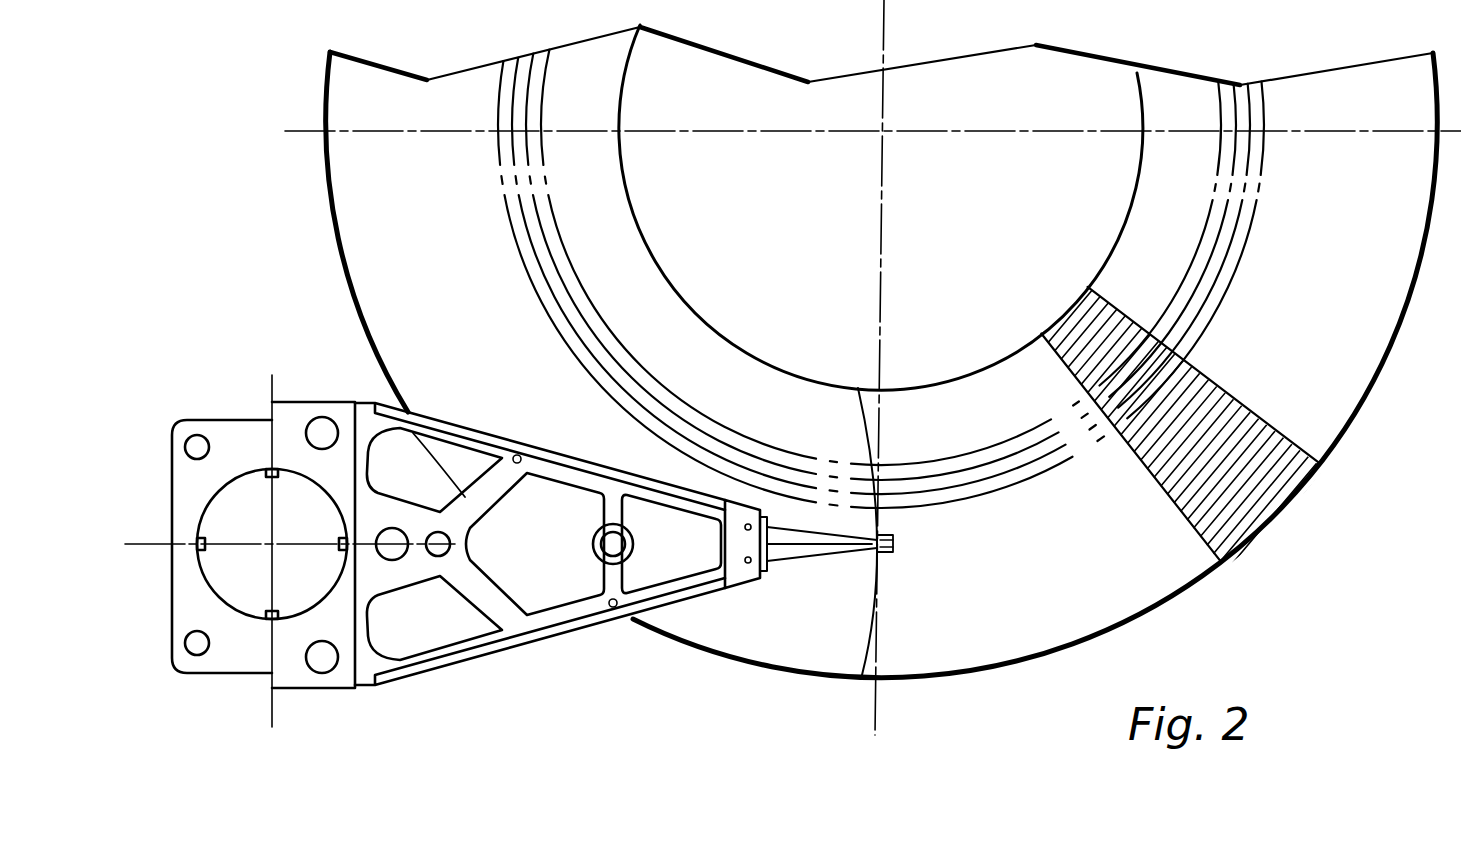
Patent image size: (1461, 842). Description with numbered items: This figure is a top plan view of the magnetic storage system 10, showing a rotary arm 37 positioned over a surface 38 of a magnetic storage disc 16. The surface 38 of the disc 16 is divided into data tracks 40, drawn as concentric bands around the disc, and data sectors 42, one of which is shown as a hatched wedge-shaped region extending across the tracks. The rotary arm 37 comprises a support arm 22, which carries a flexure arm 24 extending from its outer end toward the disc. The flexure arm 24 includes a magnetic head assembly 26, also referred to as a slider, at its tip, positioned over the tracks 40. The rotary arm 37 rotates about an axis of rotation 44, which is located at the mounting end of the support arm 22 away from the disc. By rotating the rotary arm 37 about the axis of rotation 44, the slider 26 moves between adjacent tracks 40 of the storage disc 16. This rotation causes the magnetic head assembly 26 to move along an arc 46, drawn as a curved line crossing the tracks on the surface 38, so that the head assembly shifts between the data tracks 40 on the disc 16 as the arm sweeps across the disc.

The disc drive 10 is at (206, 186).
The magnetic storage disc 16 is at (838, 367).
The support arm 22 is at (548, 548).
The flexure arm 24 is at (803, 558).
The magnetic head assembly 26 is at (882, 556).
The rotary arm 37 is at (400, 685).
The surface 38 is at (1333, 372).
The data tracks 40 is at (990, 457).
The data sectors 42 is at (1287, 501).
The axis of rotation 44 is at (268, 545).
The arc 46 is at (875, 650).